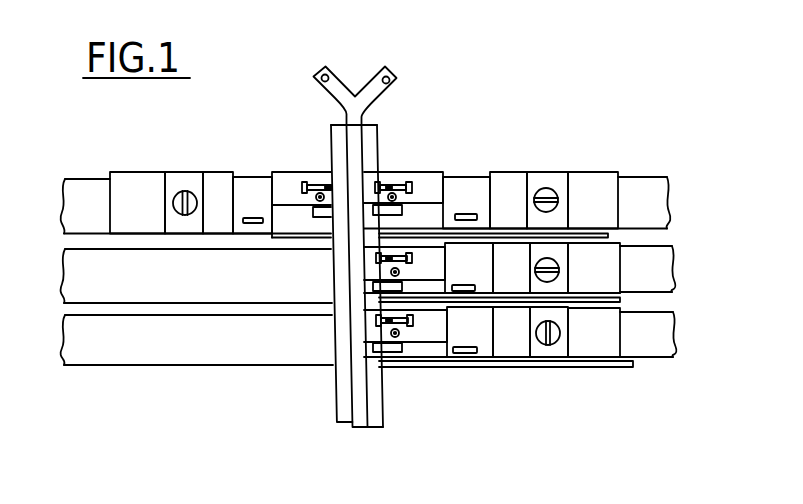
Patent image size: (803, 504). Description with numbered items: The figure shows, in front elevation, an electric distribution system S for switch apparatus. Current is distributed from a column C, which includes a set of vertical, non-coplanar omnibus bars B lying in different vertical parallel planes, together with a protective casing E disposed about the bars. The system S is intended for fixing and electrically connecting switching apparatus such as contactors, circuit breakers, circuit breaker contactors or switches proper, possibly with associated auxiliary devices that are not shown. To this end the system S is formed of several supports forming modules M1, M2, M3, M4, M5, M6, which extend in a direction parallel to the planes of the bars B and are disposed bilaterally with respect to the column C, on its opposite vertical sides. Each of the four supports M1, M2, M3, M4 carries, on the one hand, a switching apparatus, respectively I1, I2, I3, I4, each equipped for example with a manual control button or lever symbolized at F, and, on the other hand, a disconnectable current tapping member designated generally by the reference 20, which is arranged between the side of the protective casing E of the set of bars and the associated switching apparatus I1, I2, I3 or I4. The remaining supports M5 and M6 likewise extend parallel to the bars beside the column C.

The omnibus bars B is at (405, 58).
The column C is at (385, 138).
The protective casing E is at (337, 147).
The manual control button or lever F is at (546, 188).
The distribution system S is at (254, 390).
The disconnectable current tapping member 20 is at (263, 206).
The switching apparatus I1 is at (602, 214).
The switching apparatus I2 is at (606, 281).
The switching apparatus I3 is at (606, 344).
The switching apparatus I4 is at (145, 215).
The support forming module M1 is at (648, 207).
The support forming module M2 is at (652, 272).
The support forming module M3 is at (653, 333).
The support forming module M4 is at (72, 203).
The support forming module M5 is at (80, 277).
The support forming module M6 is at (76, 340).